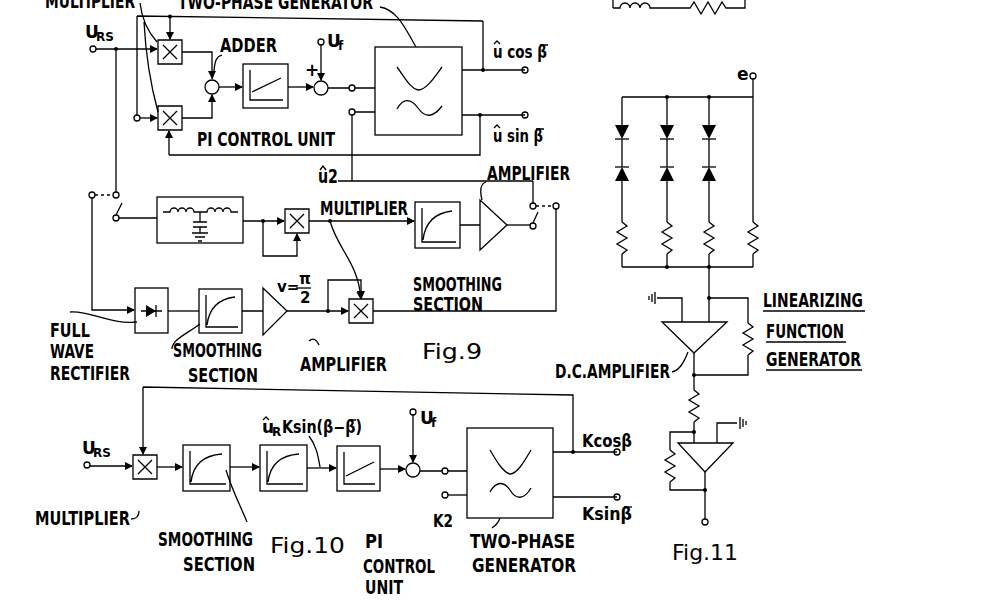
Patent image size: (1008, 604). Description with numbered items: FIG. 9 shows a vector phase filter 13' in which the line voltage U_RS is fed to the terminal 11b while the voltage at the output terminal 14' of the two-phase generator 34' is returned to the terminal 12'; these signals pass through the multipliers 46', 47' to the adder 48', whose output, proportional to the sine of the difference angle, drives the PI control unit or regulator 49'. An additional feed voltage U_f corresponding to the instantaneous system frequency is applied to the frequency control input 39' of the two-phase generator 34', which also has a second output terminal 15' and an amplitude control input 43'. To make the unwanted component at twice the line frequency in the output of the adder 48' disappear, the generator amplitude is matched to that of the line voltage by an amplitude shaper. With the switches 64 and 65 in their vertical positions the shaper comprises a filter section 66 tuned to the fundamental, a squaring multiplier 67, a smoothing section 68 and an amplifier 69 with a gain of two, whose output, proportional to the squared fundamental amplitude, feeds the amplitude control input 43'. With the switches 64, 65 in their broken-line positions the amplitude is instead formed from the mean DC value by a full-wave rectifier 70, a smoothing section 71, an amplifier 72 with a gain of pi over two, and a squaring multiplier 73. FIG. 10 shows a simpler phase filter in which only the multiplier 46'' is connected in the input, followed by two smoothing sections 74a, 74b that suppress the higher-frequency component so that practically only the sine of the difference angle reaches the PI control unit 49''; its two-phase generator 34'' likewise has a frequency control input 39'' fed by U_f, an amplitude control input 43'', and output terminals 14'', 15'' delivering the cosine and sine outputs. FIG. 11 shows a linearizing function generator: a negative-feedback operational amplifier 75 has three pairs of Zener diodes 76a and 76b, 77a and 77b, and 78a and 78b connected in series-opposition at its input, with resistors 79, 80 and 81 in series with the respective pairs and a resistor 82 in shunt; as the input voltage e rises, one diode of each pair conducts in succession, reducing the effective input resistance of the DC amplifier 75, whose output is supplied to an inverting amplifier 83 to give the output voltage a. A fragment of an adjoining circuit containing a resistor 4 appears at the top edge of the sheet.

In FIG. 9, the input terminal 11b is at (90, 53).
In FIG. 10, the input terminal 11b is at (88, 469).
In FIG. 9, the input terminal 12' is at (142, 129).
In FIG. 9, the vector phase filter 13' is at (255, 81).
In FIG. 9, the multiplier 46' is at (183, 40).
In FIG. 9, the multiplier 47' is at (172, 105).
In FIG. 9, the adder 48' is at (307, 55).
In FIG. 9, the PI control unit 49' is at (255, 97).
In FIG. 9, the frequency control input 39' is at (351, 76).
In FIG. 9, the amplitude control input 43' is at (351, 142).
In FIG. 9, the two-phase generator 34' is at (418, 80).
In FIG. 9, the output terminal 14' is at (507, 75).
In FIG. 9, the output terminal 15' is at (507, 110).
In FIG. 9, the switch 64 is at (120, 198).
In FIG. 9, the filter section 66 is at (164, 197).
In FIG. 9, the squaring function generator or multiplier 67 is at (296, 209).
In FIG. 9, the smoothing section 68 is at (408, 278).
In FIG. 9, the amplifier 69 is at (488, 242).
In FIG. 9, the switch 65 is at (537, 232).
In FIG. 9, the full-wave rectifier 70 is at (140, 288).
In FIG. 9, the smoothing section 71 is at (208, 289).
In FIG. 9, the amplifier 72 is at (280, 327).
In FIG. 9, the squaring function generator or multiplier 73 is at (374, 305).
In FIG. 10, the multiplier 46'' is at (145, 483).
In FIG. 10, the smoothing section 74a is at (204, 491).
In FIG. 10, the smoothing section 74b is at (274, 491).
In FIG. 10, the PI control unit 49'' is at (356, 485).
In FIG. 10, the two-phase generator input 39'' is at (443, 460).
In FIG. 10, the two-phase generator input 43'' is at (442, 493).
In FIG. 10, the two-phase generator 34'' is at (510, 460).
In FIG. 10, the output terminal 14'' is at (602, 456).
In FIG. 10, the output terminal 15'' is at (600, 492).
In FIG. 11, the resistor 4 is at (688, 8).
In FIG. 11, the Zener diode 78a is at (627, 134).
In FIG. 11, the Zener diode 77a is at (670, 134).
In FIG. 11, the Zener diode 76a is at (717, 134).
In FIG. 11, the Zener diode 78b is at (627, 180).
In FIG. 11, the Zener diode 77b is at (672, 180).
In FIG. 11, the Zener diode 76b is at (715, 180).
In FIG. 11, the resistor 81 is at (624, 242).
In FIG. 11, the resistor 80 is at (668, 242).
In FIG. 11, the resistor 79 is at (711, 242).
In FIG. 11, the resistor 82 is at (754, 242).
In FIG. 11, the negative-feedback operational amplifier 75 is at (680, 340).
In FIG. 11, the inverting amplifier 83 is at (722, 452).